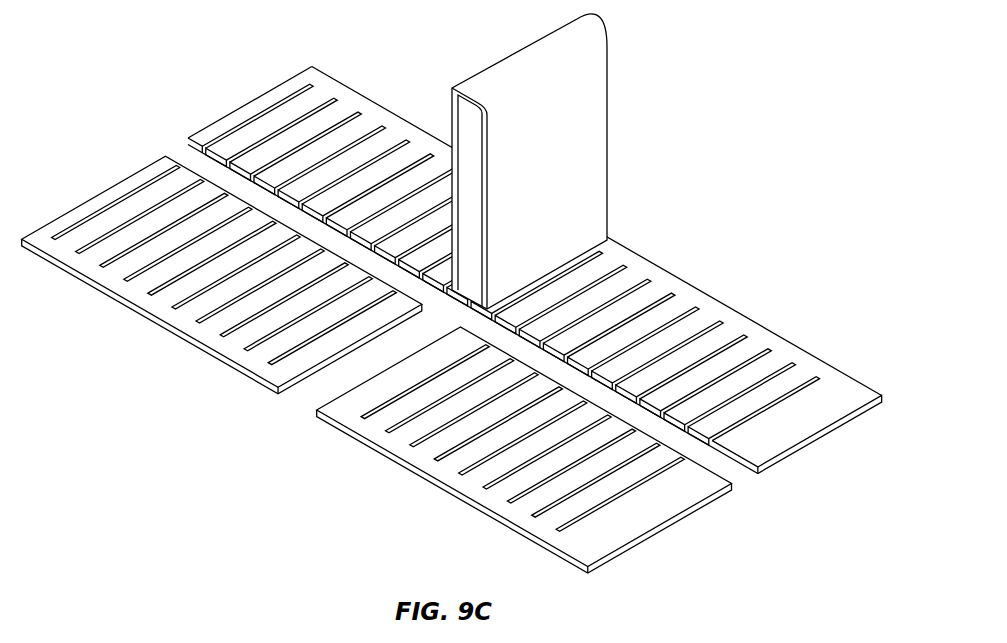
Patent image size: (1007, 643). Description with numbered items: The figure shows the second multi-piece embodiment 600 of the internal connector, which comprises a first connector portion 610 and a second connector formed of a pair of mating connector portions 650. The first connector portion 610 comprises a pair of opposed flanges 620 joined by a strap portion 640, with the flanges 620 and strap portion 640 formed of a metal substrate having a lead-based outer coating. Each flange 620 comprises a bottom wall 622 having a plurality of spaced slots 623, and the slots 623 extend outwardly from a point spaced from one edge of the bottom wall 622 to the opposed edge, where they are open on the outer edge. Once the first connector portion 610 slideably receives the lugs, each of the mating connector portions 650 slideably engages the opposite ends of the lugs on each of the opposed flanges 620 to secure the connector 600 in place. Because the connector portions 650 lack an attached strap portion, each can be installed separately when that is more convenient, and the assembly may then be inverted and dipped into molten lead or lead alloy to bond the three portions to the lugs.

The second multi-piece embodiment 600 is at (692, 68).
The first connector portion 610 is at (230, 93).
The opposed flanges 620 is at (382, 104).
The bottom wall 622 is at (752, 380).
The slots 623 is at (685, 338).
The strap portion 640 is at (568, 117).
The mating connector portions 650 is at (113, 167).